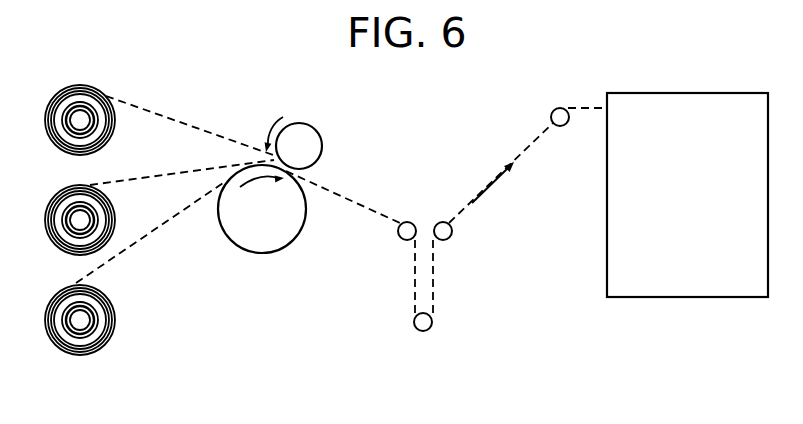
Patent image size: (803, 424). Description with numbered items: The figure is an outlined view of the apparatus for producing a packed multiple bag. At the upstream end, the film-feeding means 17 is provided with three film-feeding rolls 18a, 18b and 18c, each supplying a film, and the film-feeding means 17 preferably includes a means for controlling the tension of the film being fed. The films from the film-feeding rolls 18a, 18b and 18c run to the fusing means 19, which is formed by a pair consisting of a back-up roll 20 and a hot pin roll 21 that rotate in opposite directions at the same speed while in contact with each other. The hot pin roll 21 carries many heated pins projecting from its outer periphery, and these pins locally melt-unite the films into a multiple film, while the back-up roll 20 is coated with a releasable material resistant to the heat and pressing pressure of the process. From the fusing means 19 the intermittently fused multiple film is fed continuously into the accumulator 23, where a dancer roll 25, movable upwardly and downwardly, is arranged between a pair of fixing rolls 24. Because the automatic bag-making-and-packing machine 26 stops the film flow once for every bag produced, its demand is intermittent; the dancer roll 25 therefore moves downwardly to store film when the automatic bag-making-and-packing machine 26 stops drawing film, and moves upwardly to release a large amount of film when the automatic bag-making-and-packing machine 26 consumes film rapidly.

The film-feeding means 17 is at (96, 405).
The film-feeding roll 18a is at (102, 138).
The film-feeding roll 18b is at (102, 209).
The film-feeding roll 18c is at (102, 313).
The fusing means 19 is at (279, 317).
The back-up roll 20 is at (280, 228).
The hot pin roll 21 is at (304, 133).
The accumulator 23 is at (439, 374).
The fixing rolls 24 is at (401, 239).
The dancer roll 25 is at (432, 320).
The automatic bag-making-and-packing machine 26 is at (687, 287).